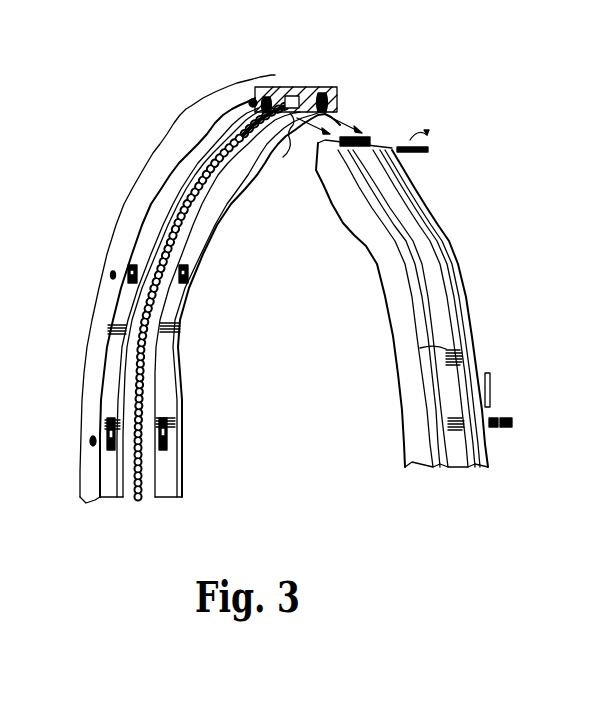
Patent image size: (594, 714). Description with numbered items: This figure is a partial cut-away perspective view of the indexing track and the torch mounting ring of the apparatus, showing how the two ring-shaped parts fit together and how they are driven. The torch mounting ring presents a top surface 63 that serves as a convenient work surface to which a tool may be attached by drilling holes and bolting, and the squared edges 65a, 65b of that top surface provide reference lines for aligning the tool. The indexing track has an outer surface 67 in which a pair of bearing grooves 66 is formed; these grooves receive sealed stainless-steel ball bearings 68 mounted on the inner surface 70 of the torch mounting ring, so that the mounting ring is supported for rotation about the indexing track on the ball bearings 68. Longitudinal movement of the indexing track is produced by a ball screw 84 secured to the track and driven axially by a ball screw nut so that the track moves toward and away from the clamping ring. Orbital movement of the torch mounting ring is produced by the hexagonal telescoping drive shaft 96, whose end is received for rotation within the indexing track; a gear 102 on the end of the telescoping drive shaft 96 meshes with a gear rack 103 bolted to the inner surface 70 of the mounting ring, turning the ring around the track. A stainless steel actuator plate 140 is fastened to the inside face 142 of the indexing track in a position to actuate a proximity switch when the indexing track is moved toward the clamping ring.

The top surface 63 is at (262, 88).
The squared edge 65a is at (352, 104).
The squared edge 65b is at (210, 289).
The bearing grooves 66 is at (445, 260).
The outer surface 67 is at (447, 346).
The ball bearings 68 is at (270, 99).
The inner surface 70 is at (278, 145).
The ball screw 84 is at (512, 423).
The telescoping drive shaft 96 is at (427, 152).
The gear 102 is at (365, 140).
The gear rack 103 is at (329, 88).
The actuator plate 140 is at (490, 392).
The inside face 142 is at (500, 337).